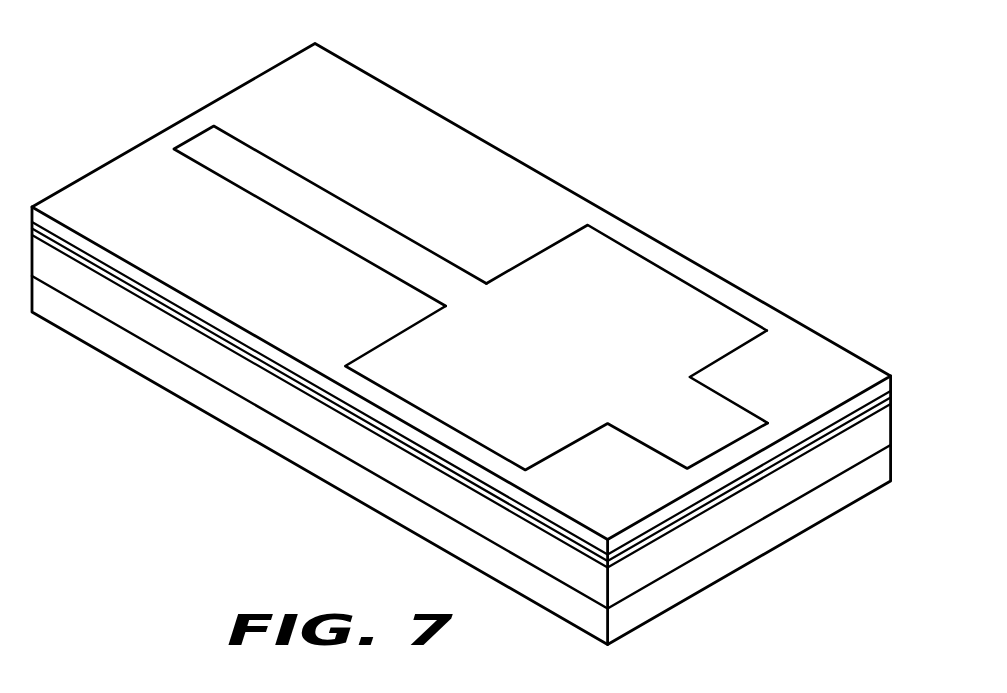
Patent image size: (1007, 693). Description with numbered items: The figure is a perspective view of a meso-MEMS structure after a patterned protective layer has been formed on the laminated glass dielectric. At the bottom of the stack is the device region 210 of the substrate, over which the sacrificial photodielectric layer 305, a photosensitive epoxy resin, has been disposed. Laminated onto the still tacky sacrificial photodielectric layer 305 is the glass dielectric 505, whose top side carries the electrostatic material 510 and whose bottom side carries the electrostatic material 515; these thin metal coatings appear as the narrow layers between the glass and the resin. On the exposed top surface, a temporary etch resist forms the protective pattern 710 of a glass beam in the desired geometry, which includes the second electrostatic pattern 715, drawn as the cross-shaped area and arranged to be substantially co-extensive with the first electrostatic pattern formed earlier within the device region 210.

The device region 210 is at (318, 478).
The sacrificial photodielectric layer 305 is at (268, 398).
The glass dielectric 505 is at (52, 221).
The electrostatic material 510 is at (124, 169).
The electrostatic material 515 is at (105, 276).
The protective pattern 710 is at (346, 261).
The second electrostatic pattern 715 is at (581, 366).